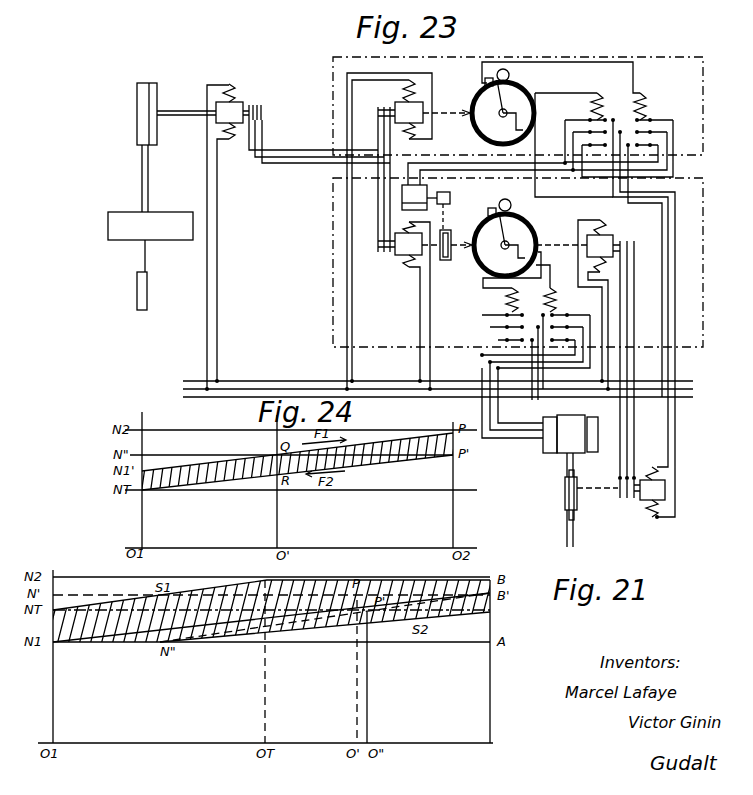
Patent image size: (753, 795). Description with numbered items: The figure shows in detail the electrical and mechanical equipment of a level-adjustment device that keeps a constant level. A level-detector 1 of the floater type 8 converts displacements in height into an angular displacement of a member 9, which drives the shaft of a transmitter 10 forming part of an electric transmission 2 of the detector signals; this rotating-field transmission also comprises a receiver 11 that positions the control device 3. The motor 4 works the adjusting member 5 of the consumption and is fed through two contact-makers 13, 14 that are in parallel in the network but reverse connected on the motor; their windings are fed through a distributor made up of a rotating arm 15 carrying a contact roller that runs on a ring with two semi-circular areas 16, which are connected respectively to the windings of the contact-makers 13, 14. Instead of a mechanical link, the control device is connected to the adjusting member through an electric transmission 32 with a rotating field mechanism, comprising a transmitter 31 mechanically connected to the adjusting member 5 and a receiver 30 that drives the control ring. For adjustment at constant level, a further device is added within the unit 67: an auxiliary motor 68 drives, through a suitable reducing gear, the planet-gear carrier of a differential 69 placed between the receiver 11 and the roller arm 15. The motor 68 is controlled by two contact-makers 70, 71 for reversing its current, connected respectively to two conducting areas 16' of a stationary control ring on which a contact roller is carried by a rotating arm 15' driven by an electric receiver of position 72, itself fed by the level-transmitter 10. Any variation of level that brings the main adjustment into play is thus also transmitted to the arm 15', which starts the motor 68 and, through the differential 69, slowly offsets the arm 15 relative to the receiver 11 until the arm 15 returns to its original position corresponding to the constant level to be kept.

The level-detector 1 is at (137, 108).
The electric transmission 2 is at (302, 158).
The control device 3 is at (333, 262).
The motor 4 is at (576, 424).
The adjusting member 5 is at (573, 538).
The floater 8 is at (125, 242).
The member 9 is at (169, 112).
The transmitter 10 is at (232, 110).
The receiver 11 is at (402, 248).
The contact-maker 13 is at (506, 302).
The contact-maker 14 is at (560, 300).
The rotating arm 15 is at (495, 198).
The rotating arm 15' is at (561, 64).
The semi-circular areas 16 is at (530, 246).
The conducting areas 16' is at (533, 138).
The receiver 30 is at (605, 244).
The transmitter 31 is at (652, 504).
The electric transmission 32 is at (628, 320).
The unit 67 is at (333, 66).
The motor 68 is at (418, 192).
The differential 69 is at (448, 258).
The contact-maker 70 is at (598, 93).
The contact-maker 71 is at (642, 93).
The electric receiver of position 72 is at (410, 92).